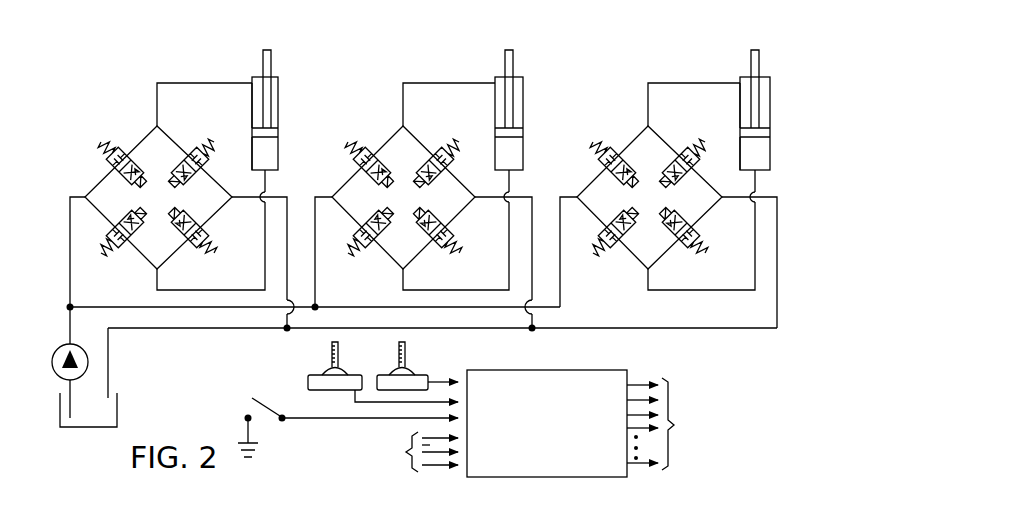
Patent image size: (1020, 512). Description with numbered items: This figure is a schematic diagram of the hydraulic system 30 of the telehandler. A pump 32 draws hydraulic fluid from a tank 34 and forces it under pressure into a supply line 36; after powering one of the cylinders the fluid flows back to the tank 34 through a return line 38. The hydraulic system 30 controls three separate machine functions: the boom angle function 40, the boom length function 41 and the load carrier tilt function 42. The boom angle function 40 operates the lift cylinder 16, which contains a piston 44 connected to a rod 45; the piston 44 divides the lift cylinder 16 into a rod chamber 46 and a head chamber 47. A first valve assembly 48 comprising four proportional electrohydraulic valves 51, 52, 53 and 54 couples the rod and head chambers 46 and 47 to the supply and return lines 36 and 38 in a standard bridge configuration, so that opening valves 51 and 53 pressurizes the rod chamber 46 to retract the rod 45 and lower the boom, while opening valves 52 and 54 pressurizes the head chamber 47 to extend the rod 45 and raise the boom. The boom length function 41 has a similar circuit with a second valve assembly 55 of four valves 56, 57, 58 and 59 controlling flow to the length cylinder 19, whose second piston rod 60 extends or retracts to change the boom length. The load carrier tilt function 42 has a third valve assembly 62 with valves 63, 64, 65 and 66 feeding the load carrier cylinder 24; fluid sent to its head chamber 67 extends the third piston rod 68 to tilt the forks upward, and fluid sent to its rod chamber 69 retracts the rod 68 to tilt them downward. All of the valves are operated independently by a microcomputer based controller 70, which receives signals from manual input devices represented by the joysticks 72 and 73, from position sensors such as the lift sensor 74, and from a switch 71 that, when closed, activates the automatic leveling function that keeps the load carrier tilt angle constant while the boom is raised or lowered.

The lift cylinder 16 is at (266, 116).
The length cylinder 19 is at (523, 107).
The load carrier hydraulic cylinder 24 is at (745, 108).
The hydraulic system 30 is at (100, 112).
The pump 32 is at (57, 350).
The tank 34 is at (60, 416).
The supply line 36 is at (152, 306).
The return line 38 is at (568, 328).
The boom angle function 40 is at (184, 174).
The boom length function 41 is at (433, 174).
The load carrier tilt function 42 is at (677, 174).
The piston 44 is at (280, 126).
The rod 45 is at (271, 66).
The rod chamber 46 is at (260, 118).
The head chamber 47 is at (260, 163).
The first valve assembly 48 is at (148, 124).
The proportional electrohydraulic valve 51 is at (116, 150).
The proportional electrohydraulic valve 52 is at (193, 172).
The proportional electrohydraulic valve 53 is at (200, 250).
The proportional electrohydraulic valve 54 is at (110, 242).
The second valve assembly 55 is at (390, 126).
The proportional electrohydraulic valve 56 is at (362, 148).
The proportional electrohydraulic valve 57 is at (438, 172).
The proportional electrohydraulic valve 58 is at (440, 250).
The proportional electrohydraulic valve 59 is at (365, 245).
The second piston rod 60 is at (513, 66).
The third valve assembly 62 is at (633, 126).
The proportional electrohydraulic valve 63 is at (607, 148).
The proportional electrohydraulic valve 64 is at (684, 172).
The proportional electrohydraulic valve 65 is at (687, 250).
The proportional electrohydraulic valve 66 is at (610, 245).
The head chamber 67 is at (747, 160).
The third piston rod 68 is at (759, 66).
The rod chamber 69 is at (748, 118).
The controller 70 is at (623, 423).
The switch 71 is at (262, 401).
The first joystick 72 is at (417, 380).
The joystick 73 is at (347, 380).
The lift sensor 74 is at (380, 452).